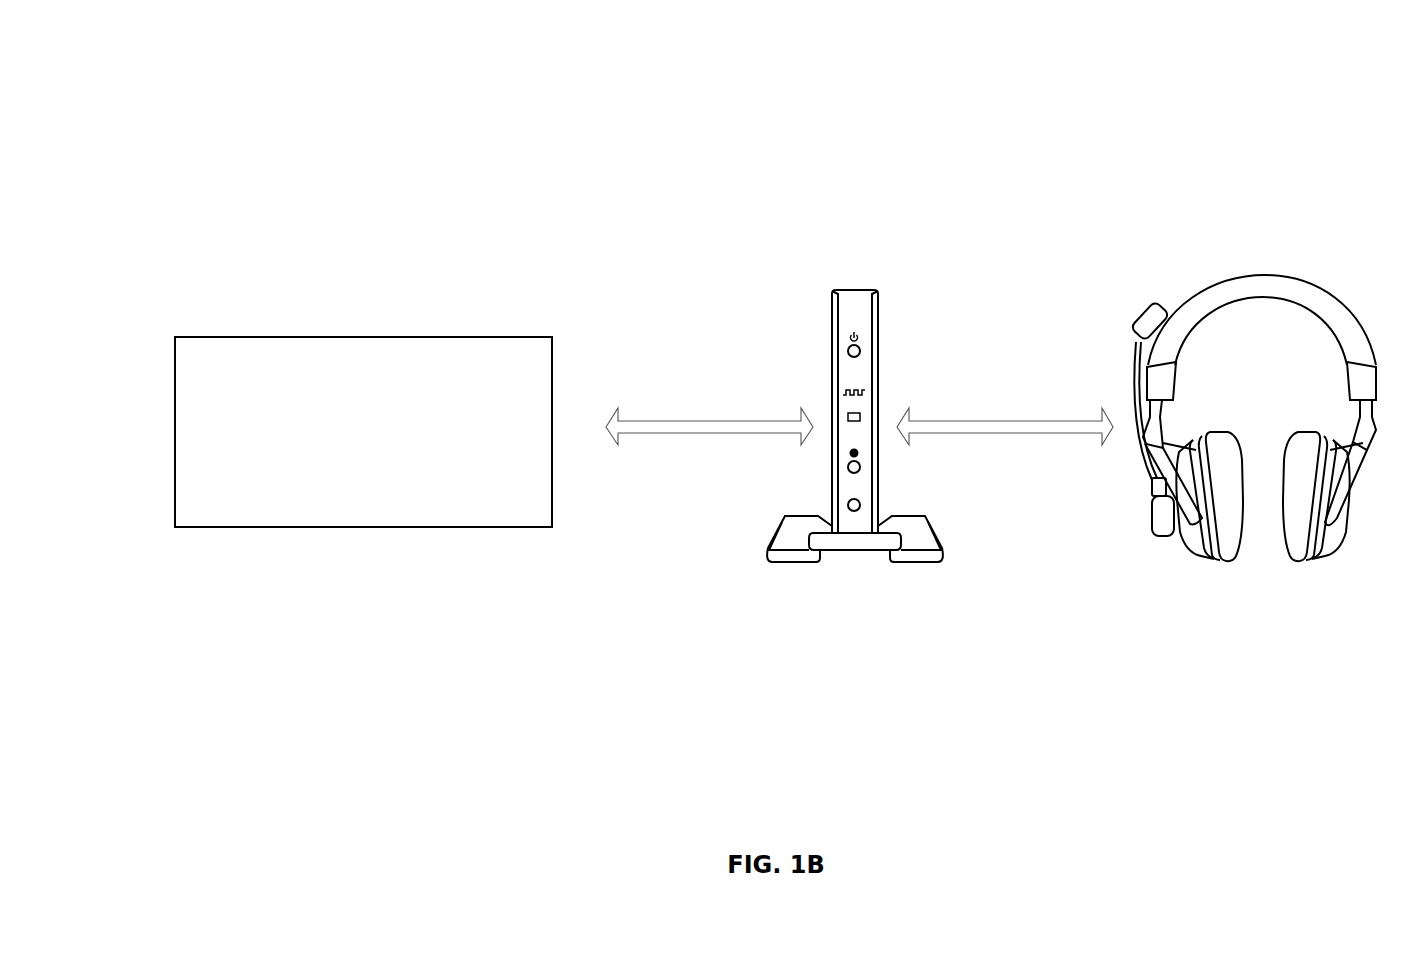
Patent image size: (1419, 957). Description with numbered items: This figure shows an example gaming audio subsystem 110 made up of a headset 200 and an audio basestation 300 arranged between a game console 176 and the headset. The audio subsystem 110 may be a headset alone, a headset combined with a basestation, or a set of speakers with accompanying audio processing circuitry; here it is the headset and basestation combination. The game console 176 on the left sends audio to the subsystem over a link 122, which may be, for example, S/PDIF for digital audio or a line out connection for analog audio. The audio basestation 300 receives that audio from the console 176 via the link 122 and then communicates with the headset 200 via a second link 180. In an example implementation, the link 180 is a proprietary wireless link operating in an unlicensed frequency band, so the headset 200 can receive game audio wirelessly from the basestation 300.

The audio subsystem 110 is at (336, 124).
The game console 176 is at (346, 452).
The link 122 is at (700, 422).
The link 180 is at (1040, 422).
The audio basestation 300 is at (840, 290).
The headset 200 is at (1218, 288).